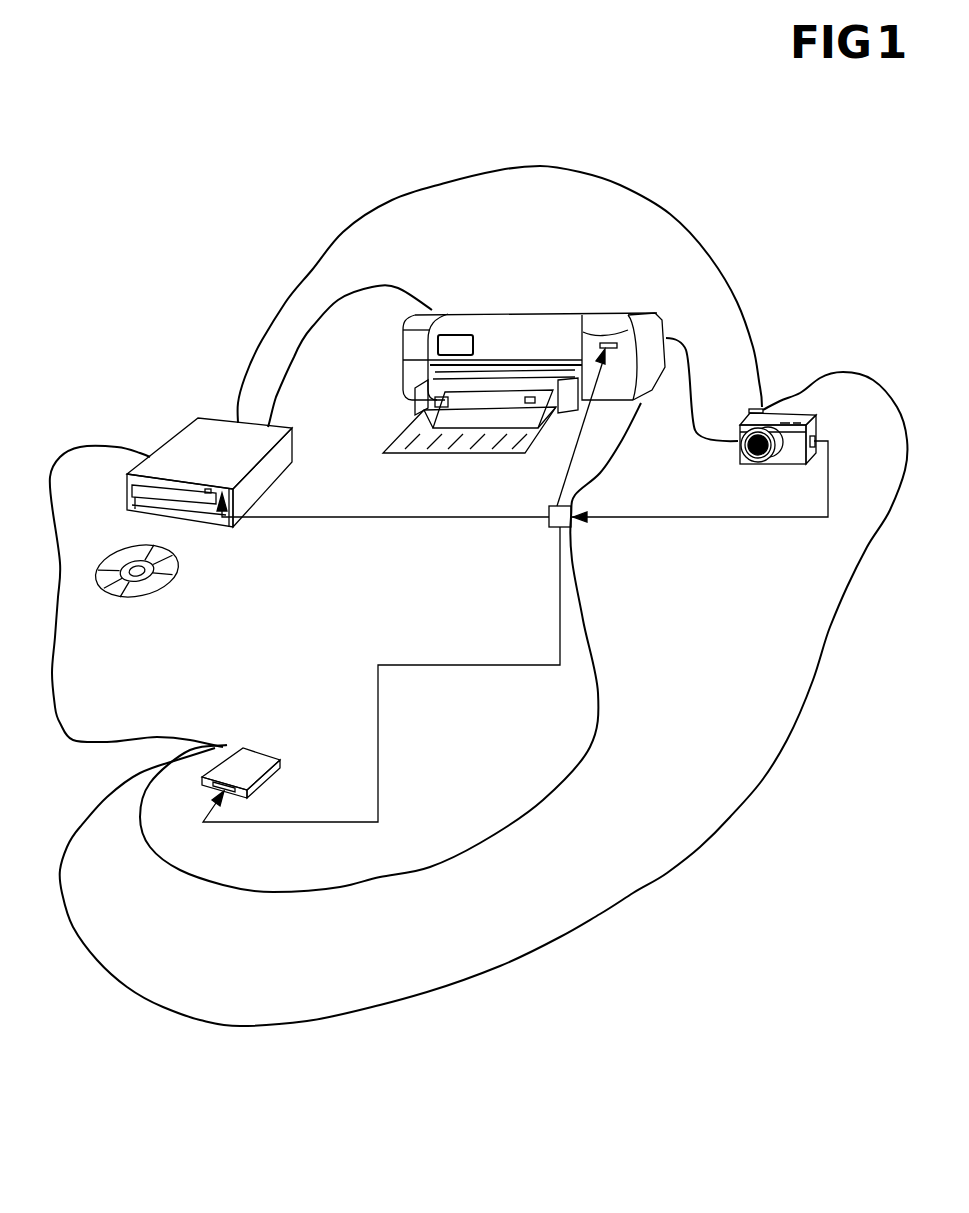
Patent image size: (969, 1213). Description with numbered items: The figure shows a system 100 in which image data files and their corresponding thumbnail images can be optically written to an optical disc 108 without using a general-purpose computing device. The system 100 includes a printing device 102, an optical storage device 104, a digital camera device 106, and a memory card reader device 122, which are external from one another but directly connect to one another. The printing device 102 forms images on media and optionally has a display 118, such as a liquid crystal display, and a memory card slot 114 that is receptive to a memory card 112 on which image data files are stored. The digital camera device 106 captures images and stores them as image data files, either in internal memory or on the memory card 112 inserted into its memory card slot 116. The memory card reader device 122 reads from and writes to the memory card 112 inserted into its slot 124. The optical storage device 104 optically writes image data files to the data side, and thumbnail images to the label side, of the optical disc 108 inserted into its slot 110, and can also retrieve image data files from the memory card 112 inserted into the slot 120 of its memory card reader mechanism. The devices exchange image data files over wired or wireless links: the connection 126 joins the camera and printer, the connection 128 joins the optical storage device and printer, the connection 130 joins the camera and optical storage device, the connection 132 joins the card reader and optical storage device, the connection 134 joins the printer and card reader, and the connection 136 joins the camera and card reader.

The system 100 is at (698, 962).
The printing device 102 is at (508, 351).
The optical storage device 104 is at (182, 463).
The digital camera device 106 is at (801, 449).
The optical disc 108 is at (131, 594).
The slot 110 is at (134, 508).
The memory card 112 is at (553, 528).
The memory card slot 114 is at (620, 316).
The memory card slot 116 is at (870, 404).
The display 118 is at (438, 350).
The slot 120 is at (245, 448).
The memory card reader device 122 is at (264, 752).
The slot 124 is at (252, 787).
The connection 126 is at (713, 441).
The connection 128 is at (303, 346).
The connection 130 is at (539, 167).
The connection 132 is at (67, 730).
The connection 134 is at (300, 889).
The connection 136 is at (230, 1023).